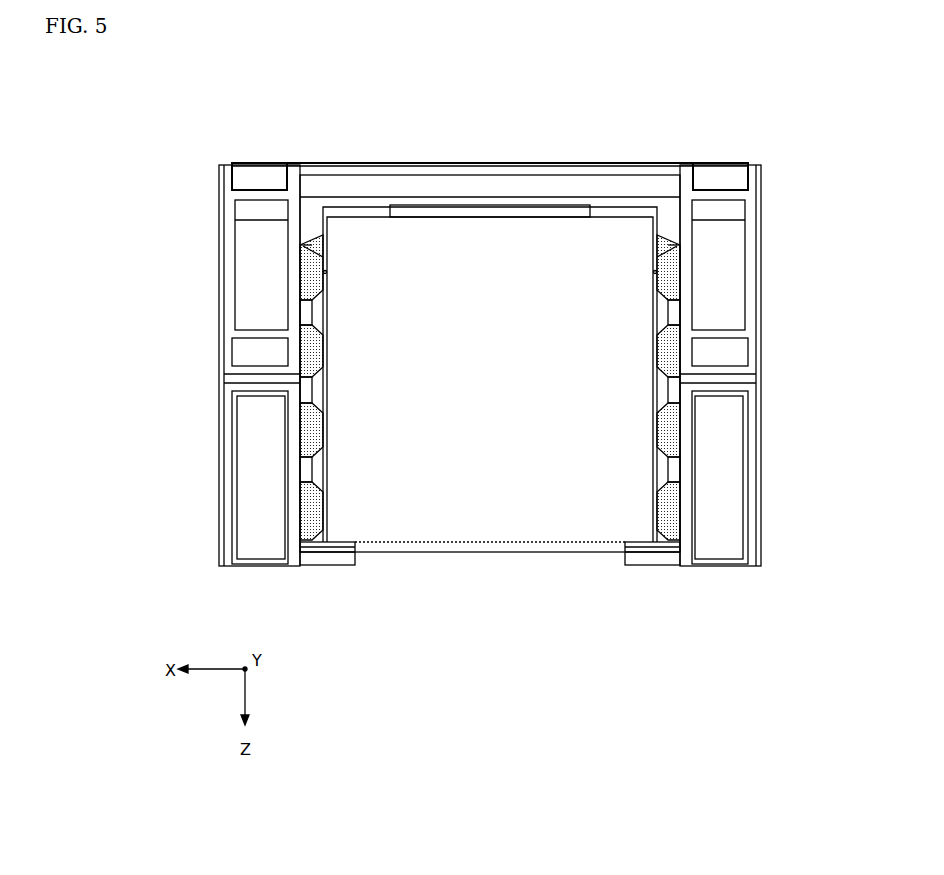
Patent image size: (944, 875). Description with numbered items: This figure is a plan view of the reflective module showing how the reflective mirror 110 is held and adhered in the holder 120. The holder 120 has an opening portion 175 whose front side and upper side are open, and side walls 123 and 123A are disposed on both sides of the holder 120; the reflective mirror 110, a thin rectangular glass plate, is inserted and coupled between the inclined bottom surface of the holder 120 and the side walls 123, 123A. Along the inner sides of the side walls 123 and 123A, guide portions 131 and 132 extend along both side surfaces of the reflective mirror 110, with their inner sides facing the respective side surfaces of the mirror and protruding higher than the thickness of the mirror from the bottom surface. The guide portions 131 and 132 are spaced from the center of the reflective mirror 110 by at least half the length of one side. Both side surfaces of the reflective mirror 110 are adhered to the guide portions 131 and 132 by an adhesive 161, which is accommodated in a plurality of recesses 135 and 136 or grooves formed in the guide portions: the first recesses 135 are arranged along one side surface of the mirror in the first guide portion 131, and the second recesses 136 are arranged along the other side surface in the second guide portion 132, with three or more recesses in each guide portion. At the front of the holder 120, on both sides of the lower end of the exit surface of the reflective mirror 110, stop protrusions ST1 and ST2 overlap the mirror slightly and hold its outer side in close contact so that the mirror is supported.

The reflective mirror 110 is at (542, 257).
The holder 120 is at (496, 379).
The side wall 123 is at (220, 468).
The side wall 123A is at (753, 476).
The first guide portion 131 is at (303, 244).
The second guide portion 132 is at (676, 243).
The first recesses 135 is at (303, 245).
The second recesses 136 is at (677, 245).
The adhesive 161 is at (325, 272).
The opening portion 175 is at (433, 556).
The stop protrusion ST1 is at (333, 566).
The stop protrusion ST2 is at (648, 566).